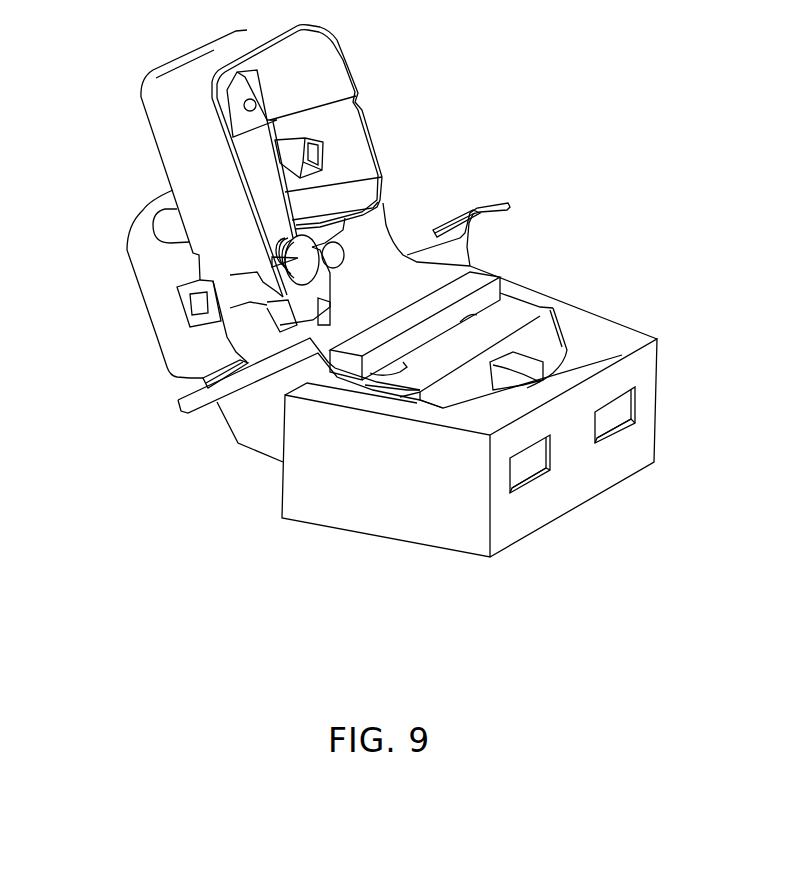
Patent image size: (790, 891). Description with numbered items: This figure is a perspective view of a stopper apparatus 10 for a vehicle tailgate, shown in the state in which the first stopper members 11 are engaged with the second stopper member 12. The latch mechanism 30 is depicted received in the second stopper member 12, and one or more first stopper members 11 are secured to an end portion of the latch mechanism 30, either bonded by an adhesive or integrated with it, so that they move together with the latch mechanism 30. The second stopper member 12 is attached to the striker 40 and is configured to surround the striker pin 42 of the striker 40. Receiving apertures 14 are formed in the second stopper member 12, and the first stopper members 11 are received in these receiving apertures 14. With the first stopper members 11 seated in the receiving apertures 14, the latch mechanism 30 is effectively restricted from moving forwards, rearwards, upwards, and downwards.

The stopper apparatus 10 is at (69, 361).
The first stopper member 11 is at (623, 408).
The second stopper member 12 is at (395, 523).
The receiving aperture 14 is at (618, 433).
The latch mechanism 30 is at (247, 432).
The striker 40 is at (484, 315).
The striker pin 42 is at (523, 365).